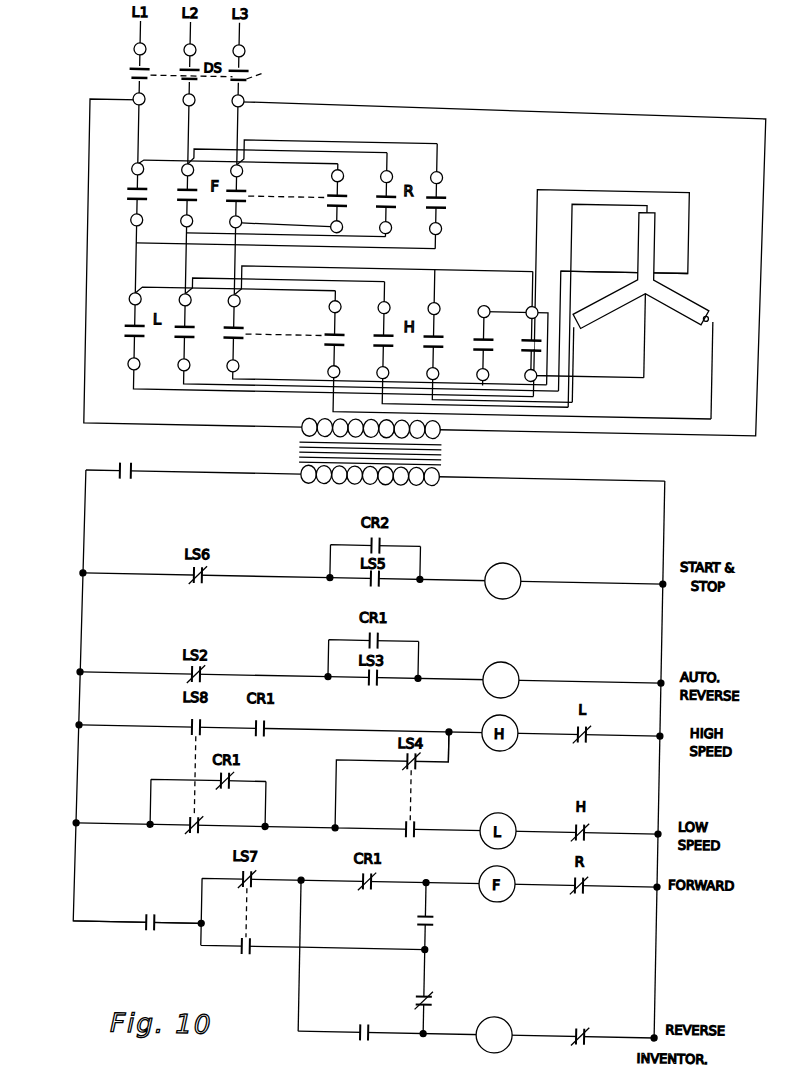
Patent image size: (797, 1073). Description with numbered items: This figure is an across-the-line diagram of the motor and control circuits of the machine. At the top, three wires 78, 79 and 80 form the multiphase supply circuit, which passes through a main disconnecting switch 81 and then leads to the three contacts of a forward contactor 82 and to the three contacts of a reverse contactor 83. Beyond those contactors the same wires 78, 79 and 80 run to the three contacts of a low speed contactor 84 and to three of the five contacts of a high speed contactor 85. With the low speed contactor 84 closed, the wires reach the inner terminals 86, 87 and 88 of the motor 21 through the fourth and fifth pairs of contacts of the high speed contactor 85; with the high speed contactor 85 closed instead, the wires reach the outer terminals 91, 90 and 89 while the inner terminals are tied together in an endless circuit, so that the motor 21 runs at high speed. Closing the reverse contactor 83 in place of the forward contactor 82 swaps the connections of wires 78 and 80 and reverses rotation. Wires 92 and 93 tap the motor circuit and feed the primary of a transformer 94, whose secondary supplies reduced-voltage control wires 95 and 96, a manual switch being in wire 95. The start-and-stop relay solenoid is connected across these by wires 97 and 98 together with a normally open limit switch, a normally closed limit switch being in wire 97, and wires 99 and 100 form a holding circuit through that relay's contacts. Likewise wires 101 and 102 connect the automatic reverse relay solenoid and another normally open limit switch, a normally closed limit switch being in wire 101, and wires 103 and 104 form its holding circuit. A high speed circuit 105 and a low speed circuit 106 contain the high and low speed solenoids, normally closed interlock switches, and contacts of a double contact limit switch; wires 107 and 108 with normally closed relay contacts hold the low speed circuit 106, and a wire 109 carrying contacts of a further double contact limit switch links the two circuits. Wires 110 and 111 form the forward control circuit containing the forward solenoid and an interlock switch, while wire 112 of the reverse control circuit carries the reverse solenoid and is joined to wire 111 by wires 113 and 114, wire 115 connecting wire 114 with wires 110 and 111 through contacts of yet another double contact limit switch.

The motor 21 is at (688, 284).
The wire 78 is at (140, 43).
The wire 79 is at (191, 43).
The wire 80 is at (240, 43).
The main disconnecting switch 81 is at (262, 70).
The forward contactor 82 is at (248, 190).
The reverse contactor 83 is at (448, 192).
The low speed contactor 84 is at (104, 312).
The high speed contactor 85 is at (486, 304).
The inner terminal 86 is at (659, 276).
The inner terminal 87 is at (646, 292).
The inner terminal 88 is at (636, 270).
The outer terminal 89 is at (610, 195).
The outer terminal 90 is at (586, 316).
The outer terminal 91 is at (713, 308).
The wire 92 is at (90, 300).
The wire 93 is at (618, 104).
The transformer 94 is at (474, 450).
The wire 95 is at (204, 470).
The wire 96 is at (590, 470).
The wire 97 is at (178, 573).
The wire 98 is at (592, 573).
The wire 99 is at (324, 557).
The wire 100 is at (430, 553).
The wire 101 is at (166, 672).
The wire 102 is at (594, 672).
The wire 103 is at (330, 660).
The wire 104 is at (430, 654).
The high speed circuit 105 is at (400, 725).
The low speed circuit 106 is at (349, 824).
The wire 107 is at (164, 807).
The wire 108 is at (280, 809).
The wire 109 is at (462, 730).
The wire 110 is at (130, 923).
The wire 111 is at (334, 877).
The wire 112 is at (443, 1030).
The wire 113 is at (318, 976).
The wire 114 is at (443, 966).
The wire 115 is at (344, 943).